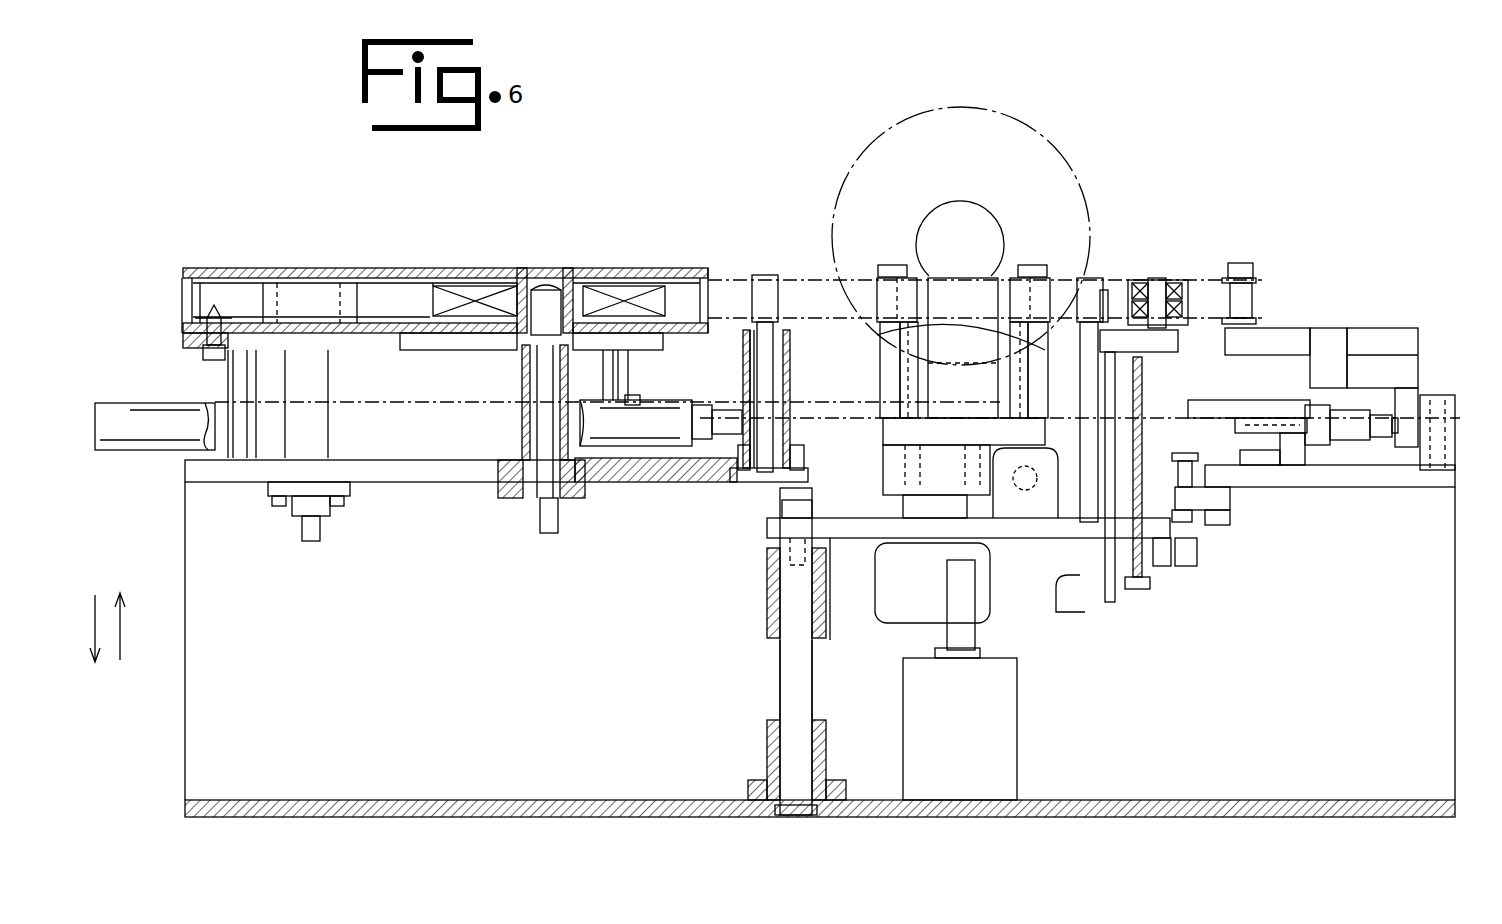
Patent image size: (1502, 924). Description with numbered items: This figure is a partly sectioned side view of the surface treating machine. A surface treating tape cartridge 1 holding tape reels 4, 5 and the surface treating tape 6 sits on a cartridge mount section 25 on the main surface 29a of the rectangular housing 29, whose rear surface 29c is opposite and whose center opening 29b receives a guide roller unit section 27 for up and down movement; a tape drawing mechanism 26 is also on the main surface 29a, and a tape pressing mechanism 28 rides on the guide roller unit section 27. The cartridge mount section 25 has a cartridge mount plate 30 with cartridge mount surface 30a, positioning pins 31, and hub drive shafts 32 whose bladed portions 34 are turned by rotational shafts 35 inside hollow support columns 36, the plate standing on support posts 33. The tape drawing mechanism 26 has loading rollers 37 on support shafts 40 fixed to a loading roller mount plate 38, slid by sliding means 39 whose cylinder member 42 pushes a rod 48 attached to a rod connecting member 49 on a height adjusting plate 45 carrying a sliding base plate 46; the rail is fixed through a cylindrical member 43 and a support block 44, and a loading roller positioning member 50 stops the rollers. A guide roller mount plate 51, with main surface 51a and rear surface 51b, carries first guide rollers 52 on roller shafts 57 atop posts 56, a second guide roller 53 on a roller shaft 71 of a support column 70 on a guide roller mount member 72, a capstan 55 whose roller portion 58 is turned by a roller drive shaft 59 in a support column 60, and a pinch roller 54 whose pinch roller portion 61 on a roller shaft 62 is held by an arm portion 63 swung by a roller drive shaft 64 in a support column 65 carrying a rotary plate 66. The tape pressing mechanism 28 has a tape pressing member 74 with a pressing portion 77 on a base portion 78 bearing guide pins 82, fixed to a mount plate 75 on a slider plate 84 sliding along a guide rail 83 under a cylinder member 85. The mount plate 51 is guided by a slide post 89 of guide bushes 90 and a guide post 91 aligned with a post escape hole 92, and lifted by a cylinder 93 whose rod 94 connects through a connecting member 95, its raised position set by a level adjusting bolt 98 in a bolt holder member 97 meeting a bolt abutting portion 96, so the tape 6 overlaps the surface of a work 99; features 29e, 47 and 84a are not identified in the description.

The surface treating tape cartridge 1 is at (183, 268).
The tape reel 4 is at (247, 270).
The tape reel 5 is at (470, 290).
The surface treating tape 6 is at (452, 290).
The cartridge mount section 25 is at (183, 340).
The tape drawing mechanism 26 is at (1466, 334).
The guide roller unit section 27 is at (768, 528).
The tape pressing mechanism 28 is at (950, 280).
The housing 29 is at (185, 470).
The main surface 29a is at (370, 452).
The opening 29b is at (768, 455).
The rear surface 29c is at (428, 484).
The bottom plate 29e is at (185, 804).
The cartridge mount plate 30 is at (195, 345).
The cartridge mount surface 30a is at (428, 342).
The positioning pins 31 is at (214, 318).
The hub drive shafts 32 is at (320, 382).
The support posts 33 is at (228, 382).
The bladed portions 34 is at (545, 300).
The rotational shafts 35 is at (310, 522).
The hollow support columns 36 is at (522, 424).
The loading rollers 37 is at (1250, 300).
The loading roller mount plate 38 is at (1280, 338).
The sliding means 39 is at (1286, 386).
The support shafts 40 is at (1242, 263).
The cylinder member 42 is at (120, 412).
The cylindrical member 43 is at (726, 470).
The support block 44 is at (1242, 428).
The height adjusting plate 45 is at (1325, 368).
The sliding base plate 46 is at (1372, 400).
The bearing 47 is at (696, 470).
The rod 48 is at (1290, 436).
The rod connecting member 49 is at (1400, 445).
The loading roller positioning member 50 is at (1446, 436).
The guide roller mount plate 51 is at (835, 540).
The main surface 51a is at (1162, 545).
The rear surface 51b is at (1186, 548).
The first guide rollers 52 is at (882, 300).
The second guide roller 53 is at (1102, 310).
The pinch rollers 54 is at (1172, 290).
The capstan 55 is at (765, 280).
The posts 56 is at (888, 368).
The roller shafts 57 is at (888, 300).
The roller portion 58 is at (756, 300).
The roller drive shaft 59 is at (744, 346).
The support column 60 is at (744, 376).
The pinch roller portion 61 is at (1182, 300).
The roller shaft 62 is at (1150, 298).
The arm portion 63 is at (1170, 341).
The roller drive shaft 64 is at (1110, 572).
The support column 65 is at (1142, 373).
The rotary plate 66 is at (1136, 589).
The support column 70 is at (1088, 355).
The roller shaft 71 is at (1090, 290).
The guide roller mount member 72 is at (1072, 600).
The tape pressing member 74 is at (970, 280).
The mount plate 75 is at (882, 462).
The pressing portion 77 is at (885, 340).
The base portion 78 is at (886, 440).
The guide pins 82 is at (905, 300).
The guide rail 83 is at (920, 556).
The slider plate 84 is at (840, 522).
The block 84a is at (906, 540).
The cylinder member 85 is at (1020, 522).
The slide post 89 is at (790, 640).
The guide bushes 90 is at (767, 592).
The guide post 91 is at (790, 680).
The post escape hole 92 is at (780, 817).
The cylinder 93 is at (965, 782).
The rod 94 is at (940, 652).
The connecting member 95 is at (952, 618).
The bolt abutting portion 96 is at (1188, 520).
The bolt holder member 97 is at (1215, 512).
The level adjusting bolt 98 is at (1178, 470).
The work 99 is at (975, 122).